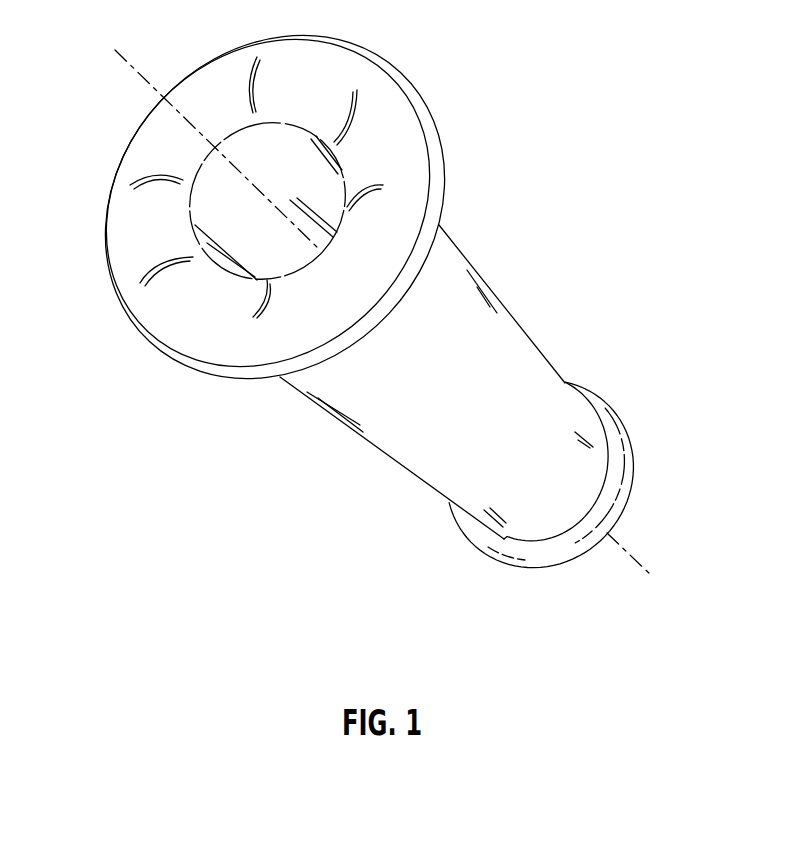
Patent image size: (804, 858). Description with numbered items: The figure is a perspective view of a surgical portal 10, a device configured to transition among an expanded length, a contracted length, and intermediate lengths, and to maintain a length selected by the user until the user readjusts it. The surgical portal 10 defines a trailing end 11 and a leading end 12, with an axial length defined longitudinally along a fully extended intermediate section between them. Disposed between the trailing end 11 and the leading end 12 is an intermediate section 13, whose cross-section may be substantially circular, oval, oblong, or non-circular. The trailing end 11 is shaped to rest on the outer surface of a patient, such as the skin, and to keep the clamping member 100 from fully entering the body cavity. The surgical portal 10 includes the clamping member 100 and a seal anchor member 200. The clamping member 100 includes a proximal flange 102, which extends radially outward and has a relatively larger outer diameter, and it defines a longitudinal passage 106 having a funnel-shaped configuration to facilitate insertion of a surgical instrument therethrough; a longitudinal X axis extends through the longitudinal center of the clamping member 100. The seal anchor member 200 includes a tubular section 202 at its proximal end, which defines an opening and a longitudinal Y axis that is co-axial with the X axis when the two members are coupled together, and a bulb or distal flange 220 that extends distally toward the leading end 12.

The surgical portal 10 is at (364, 309).
The clamping member 100 is at (293, 224).
The proximal flange 102 is at (323, 68).
The longitudinal passage 106 is at (232, 211).
The trailing end 11 is at (127, 311).
The seal anchor member 200 is at (472, 407).
The tubular section 202 is at (500, 322).
The intermediate section 13 is at (320, 460).
The leading end 12 is at (560, 485).
The distal flange 220 is at (497, 553).